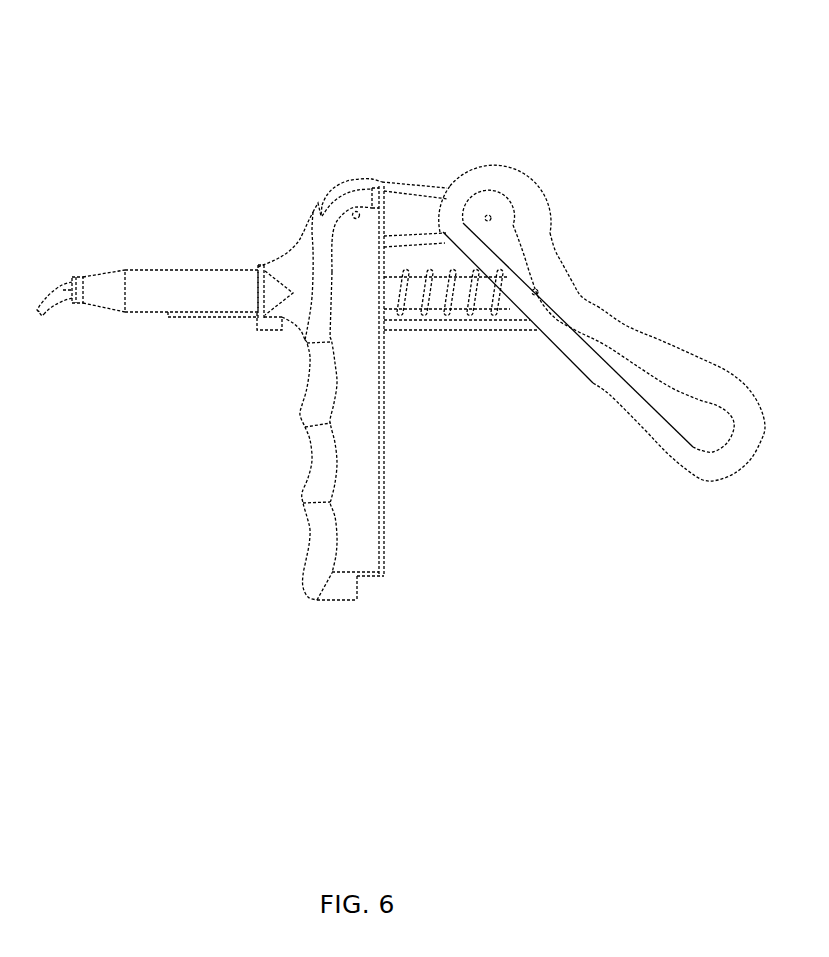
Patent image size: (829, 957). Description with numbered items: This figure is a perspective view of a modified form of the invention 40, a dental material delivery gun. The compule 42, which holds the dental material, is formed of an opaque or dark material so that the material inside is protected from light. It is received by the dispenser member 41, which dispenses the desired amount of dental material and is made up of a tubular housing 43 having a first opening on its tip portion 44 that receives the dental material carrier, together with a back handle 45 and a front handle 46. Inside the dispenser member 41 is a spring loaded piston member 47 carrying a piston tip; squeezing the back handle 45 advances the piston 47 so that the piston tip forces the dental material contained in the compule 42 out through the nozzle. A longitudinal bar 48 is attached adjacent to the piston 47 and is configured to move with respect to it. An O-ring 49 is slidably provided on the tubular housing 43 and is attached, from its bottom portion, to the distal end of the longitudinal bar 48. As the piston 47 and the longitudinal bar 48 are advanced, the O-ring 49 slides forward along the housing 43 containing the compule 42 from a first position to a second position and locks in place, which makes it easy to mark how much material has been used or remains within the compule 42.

The modified form of the invention 40 is at (566, 130).
The dispenser member 41 is at (382, 183).
The compule 42 is at (75, 281).
The tubular housing 43 is at (186, 286).
The tip portion 44 is at (100, 301).
The back handle 45 is at (701, 359).
The front handle 46 is at (315, 498).
The spring loaded piston member 47 is at (471, 300).
The longitudinal bar 48 is at (276, 324).
The O-ring 49 is at (258, 301).